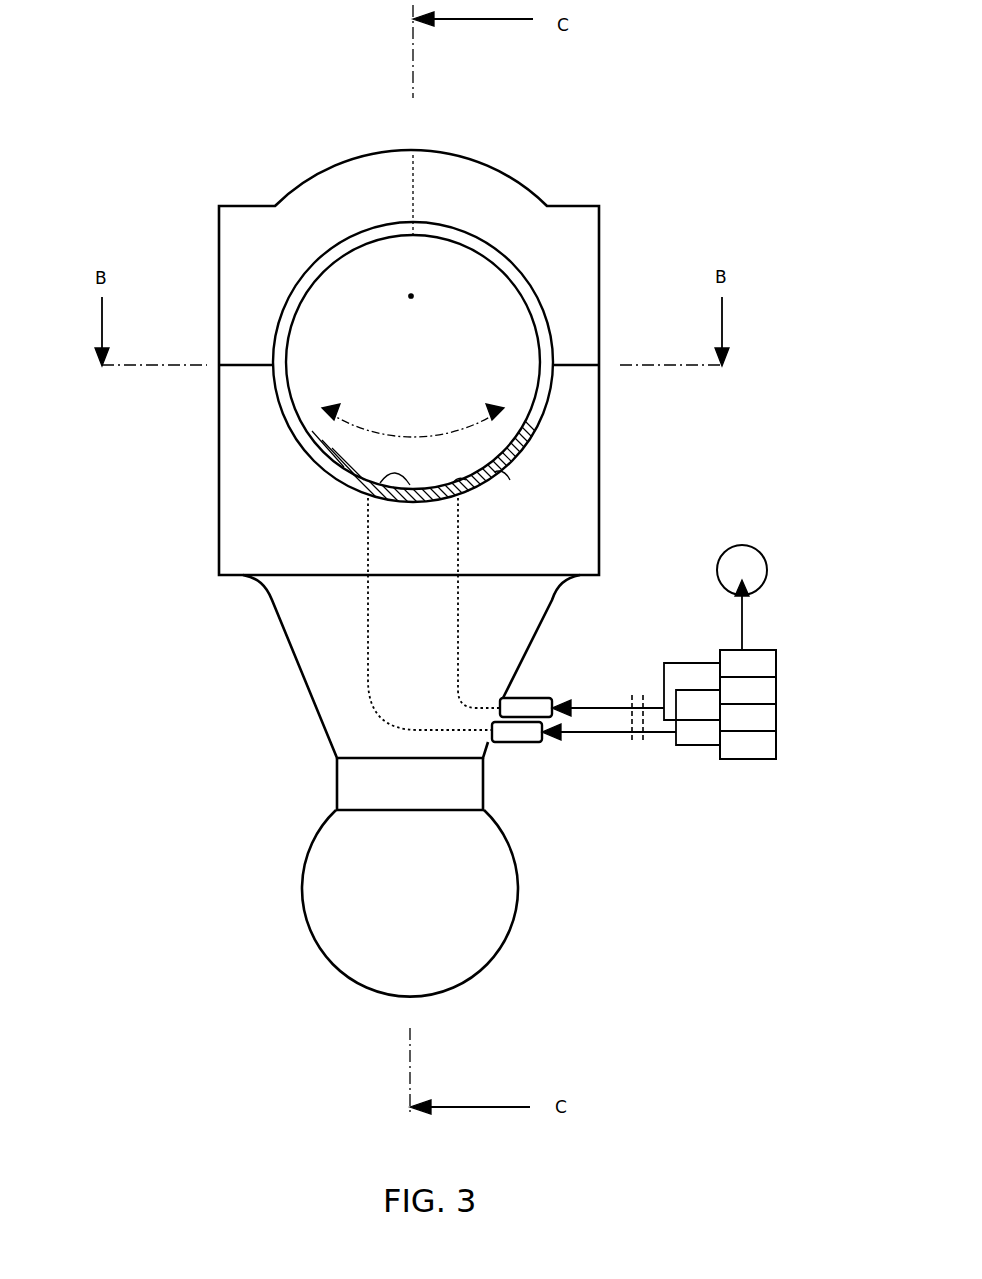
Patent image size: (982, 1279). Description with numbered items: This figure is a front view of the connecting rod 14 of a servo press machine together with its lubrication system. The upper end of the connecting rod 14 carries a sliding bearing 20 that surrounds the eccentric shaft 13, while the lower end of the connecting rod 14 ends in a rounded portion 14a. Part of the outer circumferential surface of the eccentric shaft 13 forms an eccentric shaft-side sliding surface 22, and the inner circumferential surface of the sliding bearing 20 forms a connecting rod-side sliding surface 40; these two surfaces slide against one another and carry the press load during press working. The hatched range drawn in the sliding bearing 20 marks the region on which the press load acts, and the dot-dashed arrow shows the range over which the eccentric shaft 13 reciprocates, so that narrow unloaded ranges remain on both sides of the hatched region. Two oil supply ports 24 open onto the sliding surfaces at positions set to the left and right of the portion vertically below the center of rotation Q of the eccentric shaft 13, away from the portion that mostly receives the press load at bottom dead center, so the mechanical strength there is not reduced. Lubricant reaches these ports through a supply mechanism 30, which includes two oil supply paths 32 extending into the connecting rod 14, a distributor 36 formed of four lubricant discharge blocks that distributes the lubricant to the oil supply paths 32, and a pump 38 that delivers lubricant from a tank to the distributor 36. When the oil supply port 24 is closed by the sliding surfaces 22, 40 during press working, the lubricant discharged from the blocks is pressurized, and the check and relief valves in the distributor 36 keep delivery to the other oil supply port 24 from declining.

The eccentric shaft 13 is at (350, 350).
The connecting rod 14 is at (553, 530).
The spherical portion 14a is at (516, 914).
The sliding bearing 20 is at (512, 284).
The eccentric shaft-side sliding surface 22 is at (500, 478).
The oil supply port 24 is at (380, 478).
The supply mechanism 30 is at (565, 686).
The oil supply path 32 is at (368, 645).
The distributor 36 is at (695, 769).
The pump 38 is at (716, 573).
The connecting rod-side sliding surface 40 is at (350, 487).
The center of rotation Q is at (414, 296).